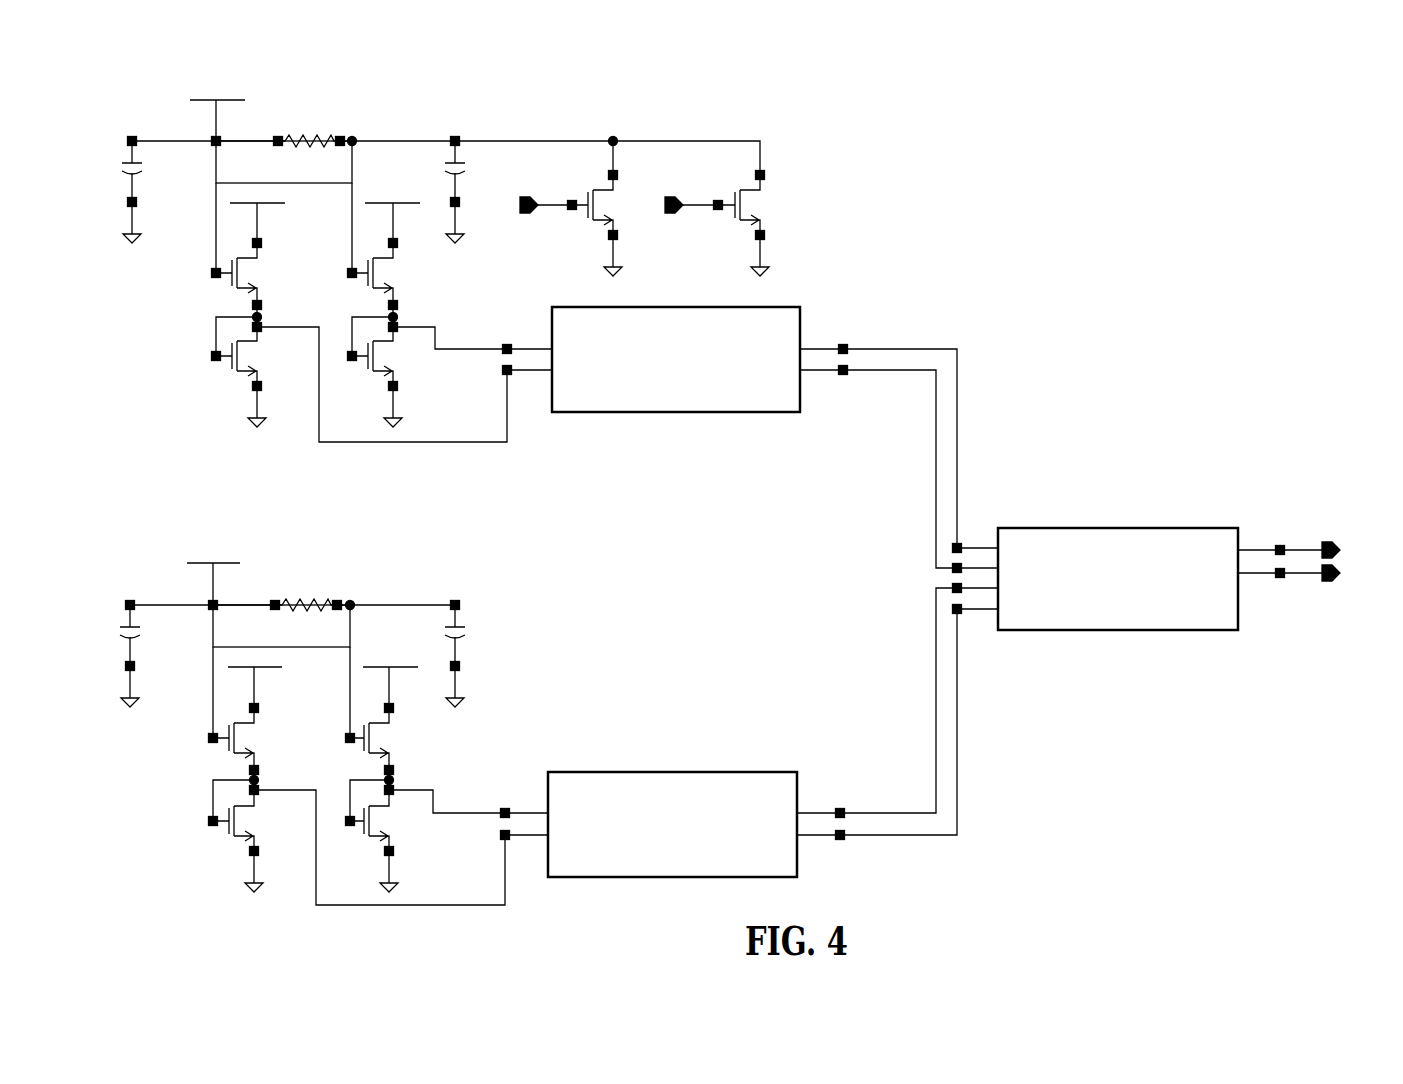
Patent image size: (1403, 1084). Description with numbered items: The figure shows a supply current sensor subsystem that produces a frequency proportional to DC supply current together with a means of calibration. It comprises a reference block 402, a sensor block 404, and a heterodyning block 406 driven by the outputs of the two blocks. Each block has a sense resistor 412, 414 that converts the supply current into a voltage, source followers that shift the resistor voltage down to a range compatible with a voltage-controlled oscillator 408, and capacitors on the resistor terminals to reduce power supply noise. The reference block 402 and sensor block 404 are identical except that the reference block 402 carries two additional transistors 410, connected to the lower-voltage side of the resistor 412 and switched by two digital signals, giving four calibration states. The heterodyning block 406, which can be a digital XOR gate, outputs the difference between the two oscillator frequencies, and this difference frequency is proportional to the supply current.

The reference block 402 is at (459, 246).
The sensor block 404 is at (371, 736).
The heterodyning block 406 is at (1182, 601).
The voltage-controlled oscillator 408 is at (690, 426).
The additional transistors 410 is at (730, 225).
The resistor 412 is at (350, 101).
The resistor 414 is at (345, 565).